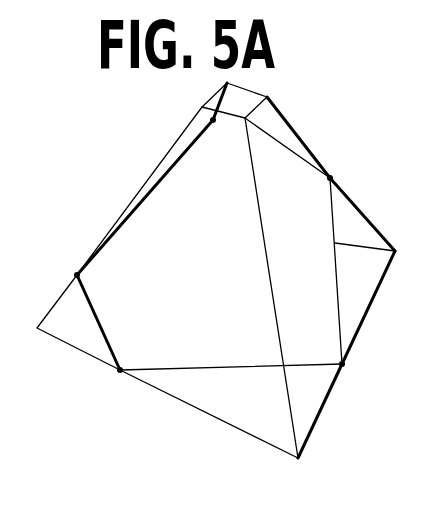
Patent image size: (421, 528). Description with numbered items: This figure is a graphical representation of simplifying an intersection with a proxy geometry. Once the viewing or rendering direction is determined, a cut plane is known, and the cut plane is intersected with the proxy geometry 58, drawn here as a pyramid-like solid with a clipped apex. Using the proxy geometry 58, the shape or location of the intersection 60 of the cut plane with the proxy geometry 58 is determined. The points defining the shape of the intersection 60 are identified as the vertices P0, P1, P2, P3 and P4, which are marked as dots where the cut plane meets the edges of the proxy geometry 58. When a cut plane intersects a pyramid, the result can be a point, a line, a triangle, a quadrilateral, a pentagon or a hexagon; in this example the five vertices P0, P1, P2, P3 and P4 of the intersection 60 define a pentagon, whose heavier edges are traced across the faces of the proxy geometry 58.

The proxy geometry 58 is at (368, 215).
The intersection 60 is at (97, 322).
The vertex P0 is at (63, 259).
The vertex P1 is at (217, 139).
The vertex P2 is at (345, 168).
The vertex P3 is at (356, 374).
The vertex P4 is at (115, 385).